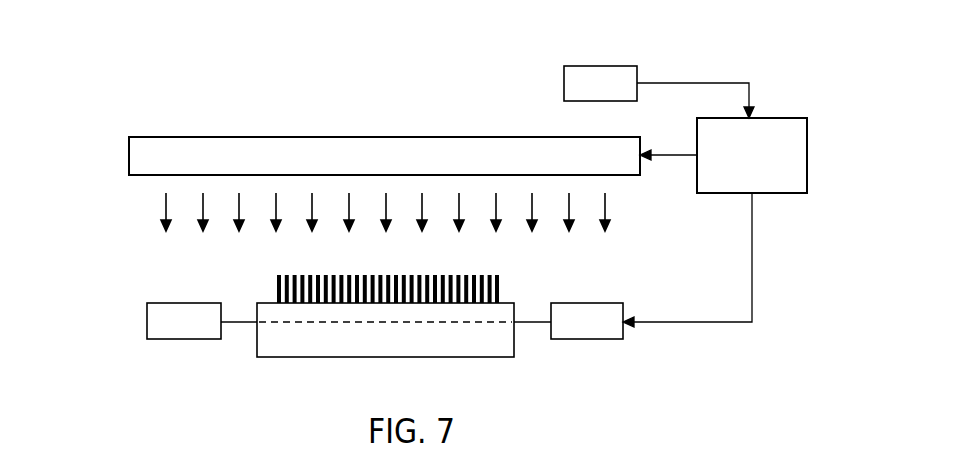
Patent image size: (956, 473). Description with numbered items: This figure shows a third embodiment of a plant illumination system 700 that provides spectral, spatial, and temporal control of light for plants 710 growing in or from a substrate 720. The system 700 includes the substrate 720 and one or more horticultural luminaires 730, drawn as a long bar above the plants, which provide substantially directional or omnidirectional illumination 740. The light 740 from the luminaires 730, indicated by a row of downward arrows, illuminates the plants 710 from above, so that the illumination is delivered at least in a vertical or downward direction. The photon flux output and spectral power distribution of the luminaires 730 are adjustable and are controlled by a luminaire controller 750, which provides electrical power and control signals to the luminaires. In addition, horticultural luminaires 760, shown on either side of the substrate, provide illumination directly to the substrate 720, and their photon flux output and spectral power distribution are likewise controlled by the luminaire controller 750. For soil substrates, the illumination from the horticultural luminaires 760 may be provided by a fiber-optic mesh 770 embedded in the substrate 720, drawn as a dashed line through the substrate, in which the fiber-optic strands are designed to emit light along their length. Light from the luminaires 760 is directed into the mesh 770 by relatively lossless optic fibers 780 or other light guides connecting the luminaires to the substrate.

The plant illumination system 700 is at (139, 56).
The plants 710 is at (277, 290).
The substrate 720 is at (508, 302).
The horticultural luminaires 730 is at (310, 137).
The illumination 740 is at (162, 213).
The luminaire controller 750 is at (768, 118).
The horticultural luminaires 760 is at (168, 302).
The fiber-optic mesh 770 is at (613, 65).
The optic fibers 780 is at (248, 323).